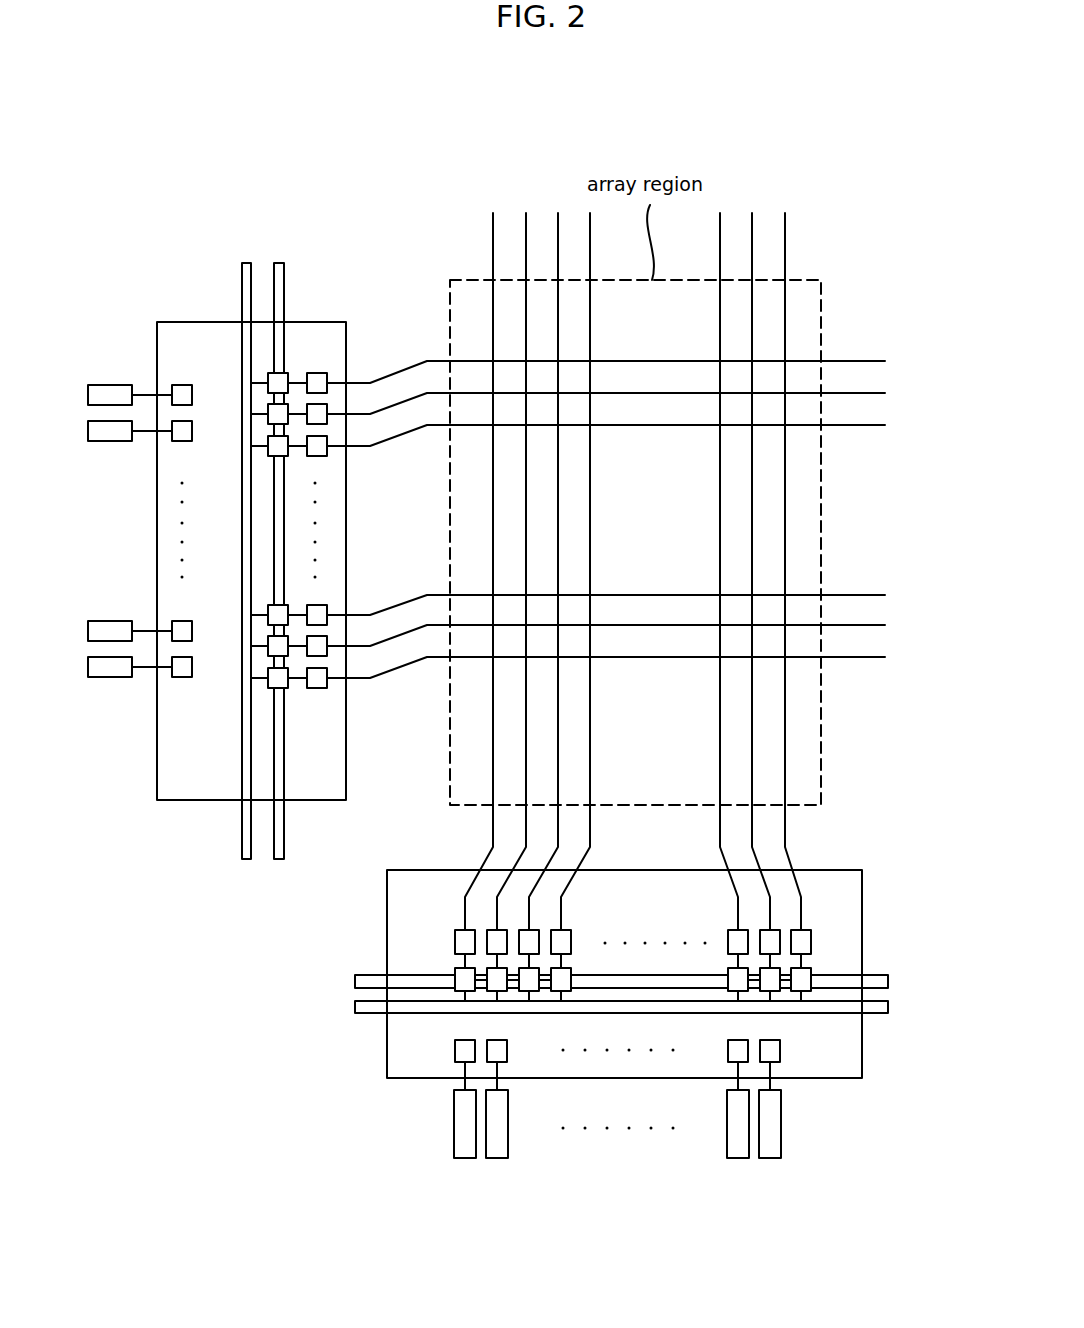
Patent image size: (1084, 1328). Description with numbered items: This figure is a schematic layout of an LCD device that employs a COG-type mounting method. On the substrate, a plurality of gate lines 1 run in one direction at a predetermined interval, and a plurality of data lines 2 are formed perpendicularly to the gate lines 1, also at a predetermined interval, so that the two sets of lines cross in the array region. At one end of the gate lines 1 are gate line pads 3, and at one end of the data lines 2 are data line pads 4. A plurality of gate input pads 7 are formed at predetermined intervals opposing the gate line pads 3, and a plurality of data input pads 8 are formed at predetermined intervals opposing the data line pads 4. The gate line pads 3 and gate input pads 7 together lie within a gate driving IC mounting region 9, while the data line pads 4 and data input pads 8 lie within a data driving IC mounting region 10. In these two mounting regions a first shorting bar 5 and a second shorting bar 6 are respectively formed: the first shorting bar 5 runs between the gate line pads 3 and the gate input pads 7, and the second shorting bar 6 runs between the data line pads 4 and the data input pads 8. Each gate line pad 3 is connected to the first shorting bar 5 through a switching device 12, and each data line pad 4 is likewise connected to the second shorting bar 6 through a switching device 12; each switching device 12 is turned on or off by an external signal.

The gate lines 1 is at (668, 428).
The data lines 2 is at (588, 546).
The gate line pads 3 is at (316, 380).
The data line pads 4 is at (455, 940).
The first shorting bar 5 is at (245, 285).
The second shorting bar 6 is at (893, 1010).
The gate input pads 7 is at (182, 385).
The data input pads 8 is at (782, 1052).
The gate driving IC mounting region 9 is at (175, 778).
The data driving IC mounting region 10 is at (815, 1082).
The switching devices 12 is at (283, 450).